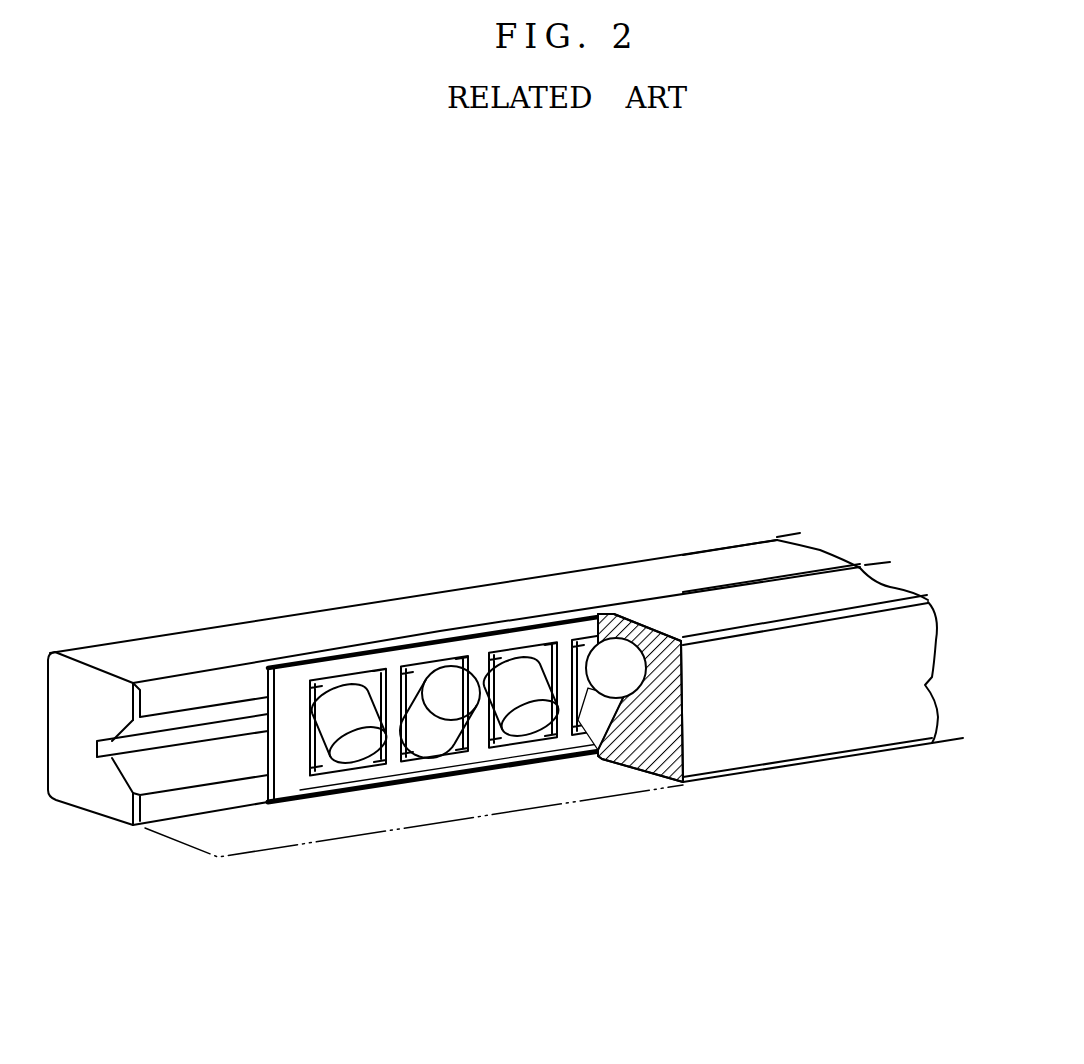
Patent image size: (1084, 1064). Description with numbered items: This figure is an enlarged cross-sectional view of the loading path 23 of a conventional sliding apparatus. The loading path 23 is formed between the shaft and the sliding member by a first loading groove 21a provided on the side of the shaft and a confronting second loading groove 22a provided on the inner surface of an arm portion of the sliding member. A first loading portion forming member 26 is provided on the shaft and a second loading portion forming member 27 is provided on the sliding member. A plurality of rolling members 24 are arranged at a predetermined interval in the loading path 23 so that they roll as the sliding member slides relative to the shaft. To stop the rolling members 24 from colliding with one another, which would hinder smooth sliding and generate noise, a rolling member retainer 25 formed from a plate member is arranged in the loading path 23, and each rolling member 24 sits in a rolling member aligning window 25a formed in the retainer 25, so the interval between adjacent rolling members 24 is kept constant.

The first loading groove 21a is at (212, 763).
The second loading groove 22a is at (592, 733).
The loading path 23 is at (213, 720).
The rolling member 24 is at (443, 700).
The rolling member retainer 25 is at (477, 740).
The rolling member aligning window 25a is at (403, 760).
The first loading portion forming member 26 is at (558, 595).
The second loading portion forming member 27 is at (805, 740).